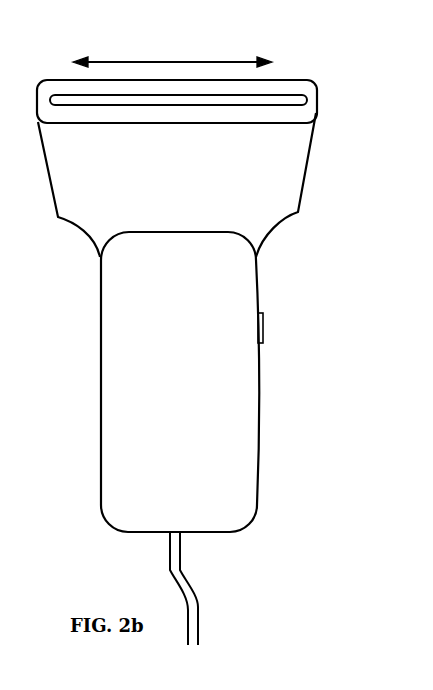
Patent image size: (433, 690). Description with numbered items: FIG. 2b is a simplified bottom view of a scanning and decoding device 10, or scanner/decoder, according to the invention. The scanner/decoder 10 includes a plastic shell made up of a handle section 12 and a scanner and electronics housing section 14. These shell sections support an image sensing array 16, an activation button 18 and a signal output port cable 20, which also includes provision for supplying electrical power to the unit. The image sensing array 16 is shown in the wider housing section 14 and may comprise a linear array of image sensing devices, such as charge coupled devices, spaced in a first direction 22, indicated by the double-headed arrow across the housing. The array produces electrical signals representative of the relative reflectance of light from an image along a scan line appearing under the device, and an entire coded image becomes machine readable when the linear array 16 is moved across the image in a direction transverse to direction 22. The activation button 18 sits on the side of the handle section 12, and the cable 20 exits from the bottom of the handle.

The scanning and decoding device 10 is at (210, 327).
The handle section 12 is at (258, 443).
The scanner and electronics housing section 14 is at (305, 182).
The image sensing array 16 is at (283, 97).
The activation button 18 is at (263, 322).
The signal output port cable 20 is at (195, 592).
The first direction 22 is at (162, 62).